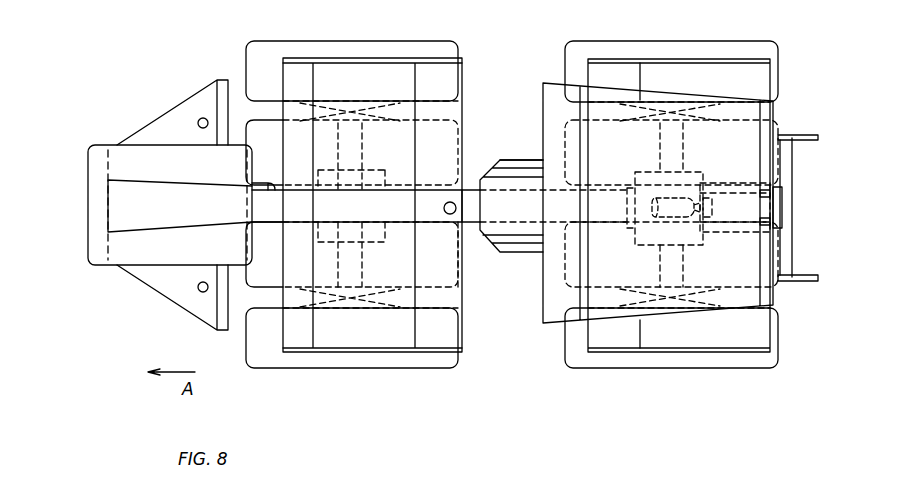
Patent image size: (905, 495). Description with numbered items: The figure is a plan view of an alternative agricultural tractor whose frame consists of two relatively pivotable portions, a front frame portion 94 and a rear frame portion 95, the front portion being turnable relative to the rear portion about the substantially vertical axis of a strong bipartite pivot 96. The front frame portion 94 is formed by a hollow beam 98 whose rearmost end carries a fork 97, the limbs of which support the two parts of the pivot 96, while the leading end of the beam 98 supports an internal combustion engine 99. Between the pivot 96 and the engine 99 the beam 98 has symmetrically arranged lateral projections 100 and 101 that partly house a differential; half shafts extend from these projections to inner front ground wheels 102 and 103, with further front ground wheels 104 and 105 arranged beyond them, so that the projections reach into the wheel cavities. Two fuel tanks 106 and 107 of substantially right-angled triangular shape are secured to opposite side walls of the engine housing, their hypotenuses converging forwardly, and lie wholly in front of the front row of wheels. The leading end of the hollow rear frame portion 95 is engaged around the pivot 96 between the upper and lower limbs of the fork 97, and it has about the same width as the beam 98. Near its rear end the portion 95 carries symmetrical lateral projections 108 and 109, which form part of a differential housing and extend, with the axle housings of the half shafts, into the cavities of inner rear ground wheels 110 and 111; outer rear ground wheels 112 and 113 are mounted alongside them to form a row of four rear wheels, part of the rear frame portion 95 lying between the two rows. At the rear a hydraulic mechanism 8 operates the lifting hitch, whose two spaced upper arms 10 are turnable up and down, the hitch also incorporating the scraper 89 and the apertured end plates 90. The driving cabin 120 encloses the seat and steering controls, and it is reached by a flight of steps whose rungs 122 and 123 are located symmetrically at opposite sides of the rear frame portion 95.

The hydraulic mechanism 8 is at (692, 219).
The upper arms 10 is at (750, 230).
The scraper 89 is at (792, 172).
The apertured end plates 90 is at (810, 135).
The front frame portion 94 is at (268, 186).
The rear frame portion 95 is at (477, 182).
The bipartite pivot 96 is at (456, 212).
The fork 97 is at (433, 222).
The hollow beam 98 is at (378, 222).
The internal combustion engine 99 is at (108, 144).
The lateral projection 100 is at (334, 244).
The lateral projection 101 is at (366, 175).
The front ground wheel 102 is at (458, 284).
The front ground wheel 103 is at (458, 125).
The front ground wheel 104 is at (440, 360).
The front ground wheel 105 is at (432, 46).
The fuel tank 106 is at (168, 294).
The fuel tank 107 is at (184, 100).
The lateral projection 108 is at (648, 250).
The lateral projection 109 is at (648, 170).
The rear ground wheel 110 is at (565, 286).
The rear ground wheel 111 is at (580, 135).
The rear ground wheel 112 is at (672, 368).
The rear ground wheel 113 is at (690, 46).
The driving cabin 120 is at (554, 74).
The rung 122 is at (527, 262).
The rung 123 is at (512, 166).